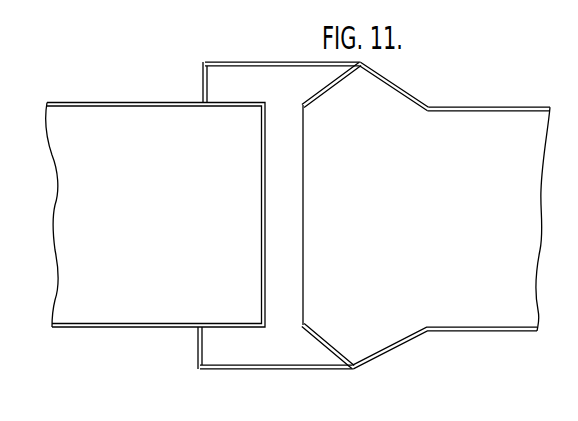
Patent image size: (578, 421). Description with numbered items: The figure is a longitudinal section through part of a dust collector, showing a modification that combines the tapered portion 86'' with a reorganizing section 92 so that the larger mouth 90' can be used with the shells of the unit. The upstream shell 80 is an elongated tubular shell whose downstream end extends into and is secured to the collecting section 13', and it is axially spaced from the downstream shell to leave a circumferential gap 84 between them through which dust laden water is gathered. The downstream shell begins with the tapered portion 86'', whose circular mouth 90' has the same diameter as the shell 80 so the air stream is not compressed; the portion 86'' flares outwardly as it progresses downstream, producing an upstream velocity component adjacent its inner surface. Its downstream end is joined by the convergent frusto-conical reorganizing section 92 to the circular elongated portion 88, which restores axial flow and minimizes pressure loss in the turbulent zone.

The upstream tubular shell 80 is at (163, 323).
The circumferential gap 84 is at (281, 236).
The circular mouth 90' is at (329, 215).
The tapered portion 86'' is at (333, 341).
The collecting section 13' is at (276, 388).
The convergent frusto-conical portion 92 is at (401, 91).
The circular elongated portion 88 is at (496, 112).